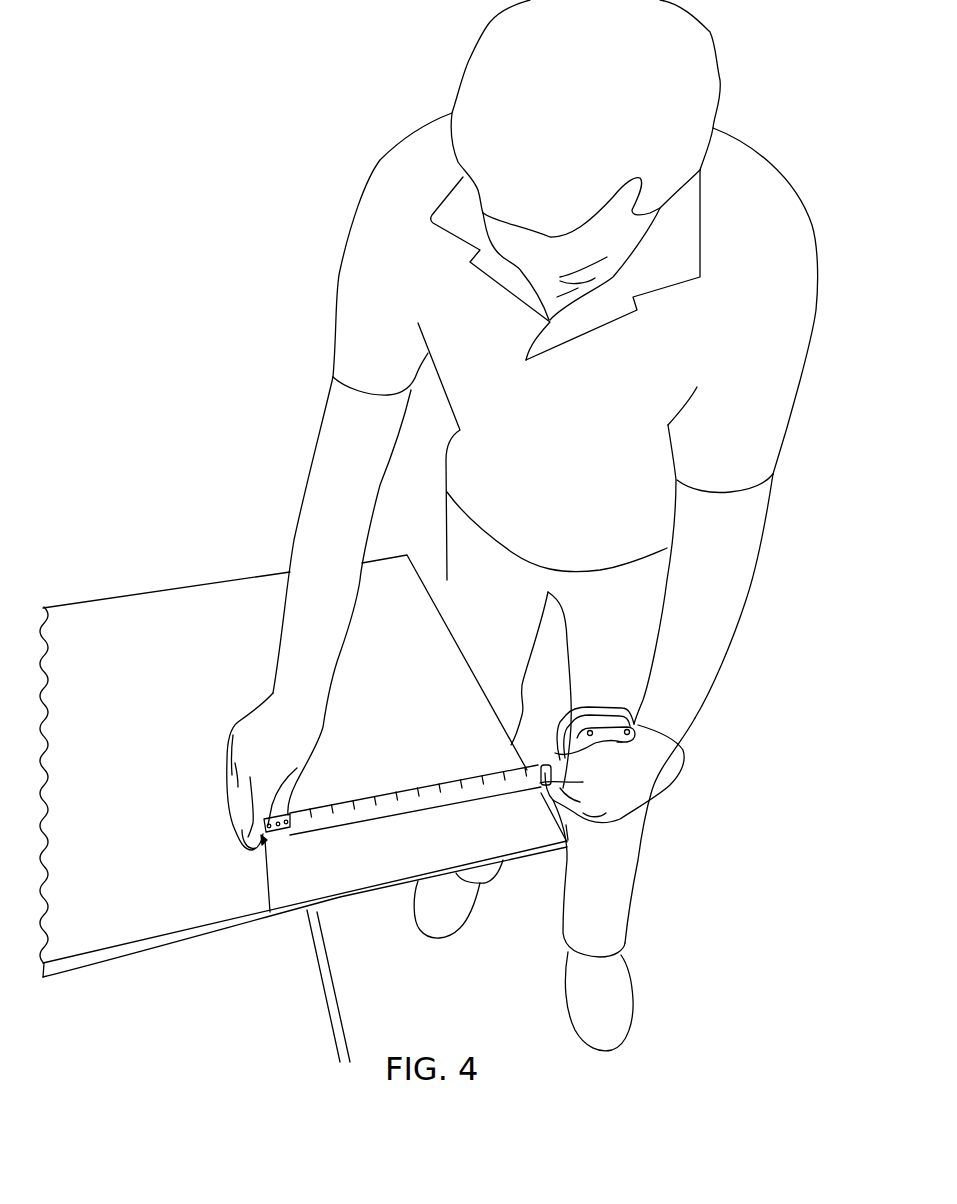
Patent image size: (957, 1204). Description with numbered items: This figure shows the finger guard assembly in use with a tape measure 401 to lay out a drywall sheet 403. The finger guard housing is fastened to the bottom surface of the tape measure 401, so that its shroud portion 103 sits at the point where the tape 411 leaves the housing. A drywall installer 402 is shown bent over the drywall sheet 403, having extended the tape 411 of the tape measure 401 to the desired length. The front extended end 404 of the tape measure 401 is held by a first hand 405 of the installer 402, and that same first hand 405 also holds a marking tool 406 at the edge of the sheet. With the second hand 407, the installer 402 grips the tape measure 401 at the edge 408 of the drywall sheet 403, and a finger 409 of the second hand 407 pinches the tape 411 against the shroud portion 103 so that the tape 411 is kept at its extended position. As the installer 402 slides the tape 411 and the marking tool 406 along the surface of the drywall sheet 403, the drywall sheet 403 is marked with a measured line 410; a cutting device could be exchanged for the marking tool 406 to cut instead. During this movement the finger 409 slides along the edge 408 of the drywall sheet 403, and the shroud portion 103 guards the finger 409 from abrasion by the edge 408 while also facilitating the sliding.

The shroud portion 103 is at (538, 793).
The tape measure 401 is at (613, 721).
The drywall installer 402 is at (548, 522).
The drywall sheet 403 is at (525, 833).
The front extended end 404 is at (264, 819).
The first hand 405 is at (245, 778).
The marking tool 406 is at (266, 835).
The second hand 407 is at (617, 790).
The edge 408 is at (568, 832).
The finger 409 is at (570, 798).
The measured line 410 is at (267, 883).
The tape 411 is at (353, 801).